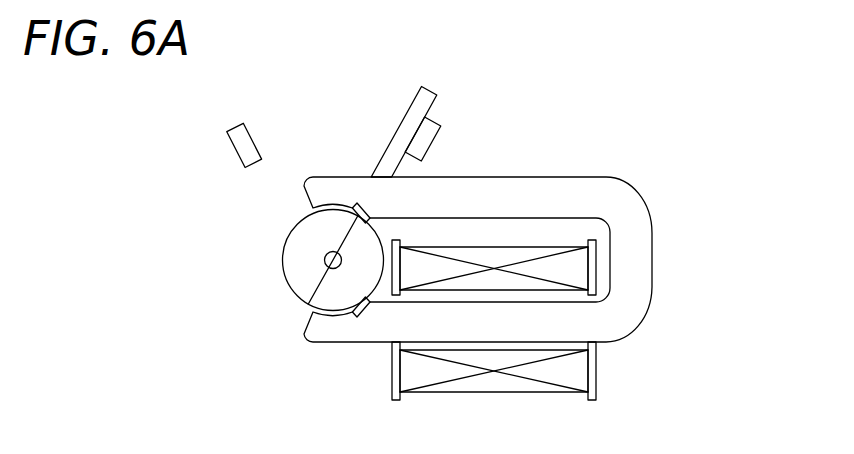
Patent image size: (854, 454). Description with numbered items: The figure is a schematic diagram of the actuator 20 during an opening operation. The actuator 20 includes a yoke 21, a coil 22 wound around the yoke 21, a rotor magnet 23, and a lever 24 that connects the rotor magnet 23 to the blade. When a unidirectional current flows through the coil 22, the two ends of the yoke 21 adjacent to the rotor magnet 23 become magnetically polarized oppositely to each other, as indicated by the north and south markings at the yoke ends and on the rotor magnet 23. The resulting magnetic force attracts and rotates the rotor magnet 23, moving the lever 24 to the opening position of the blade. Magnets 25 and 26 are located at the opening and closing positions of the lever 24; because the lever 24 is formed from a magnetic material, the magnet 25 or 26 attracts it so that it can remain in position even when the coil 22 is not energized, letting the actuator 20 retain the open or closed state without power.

The actuator 20 is at (690, 172).
The yoke 21 is at (652, 260).
The coil 22 is at (510, 247).
The rotor magnet 23 is at (282, 263).
The lever 24 is at (424, 87).
The magnet 25 is at (438, 133).
The magnet 26 is at (254, 132).